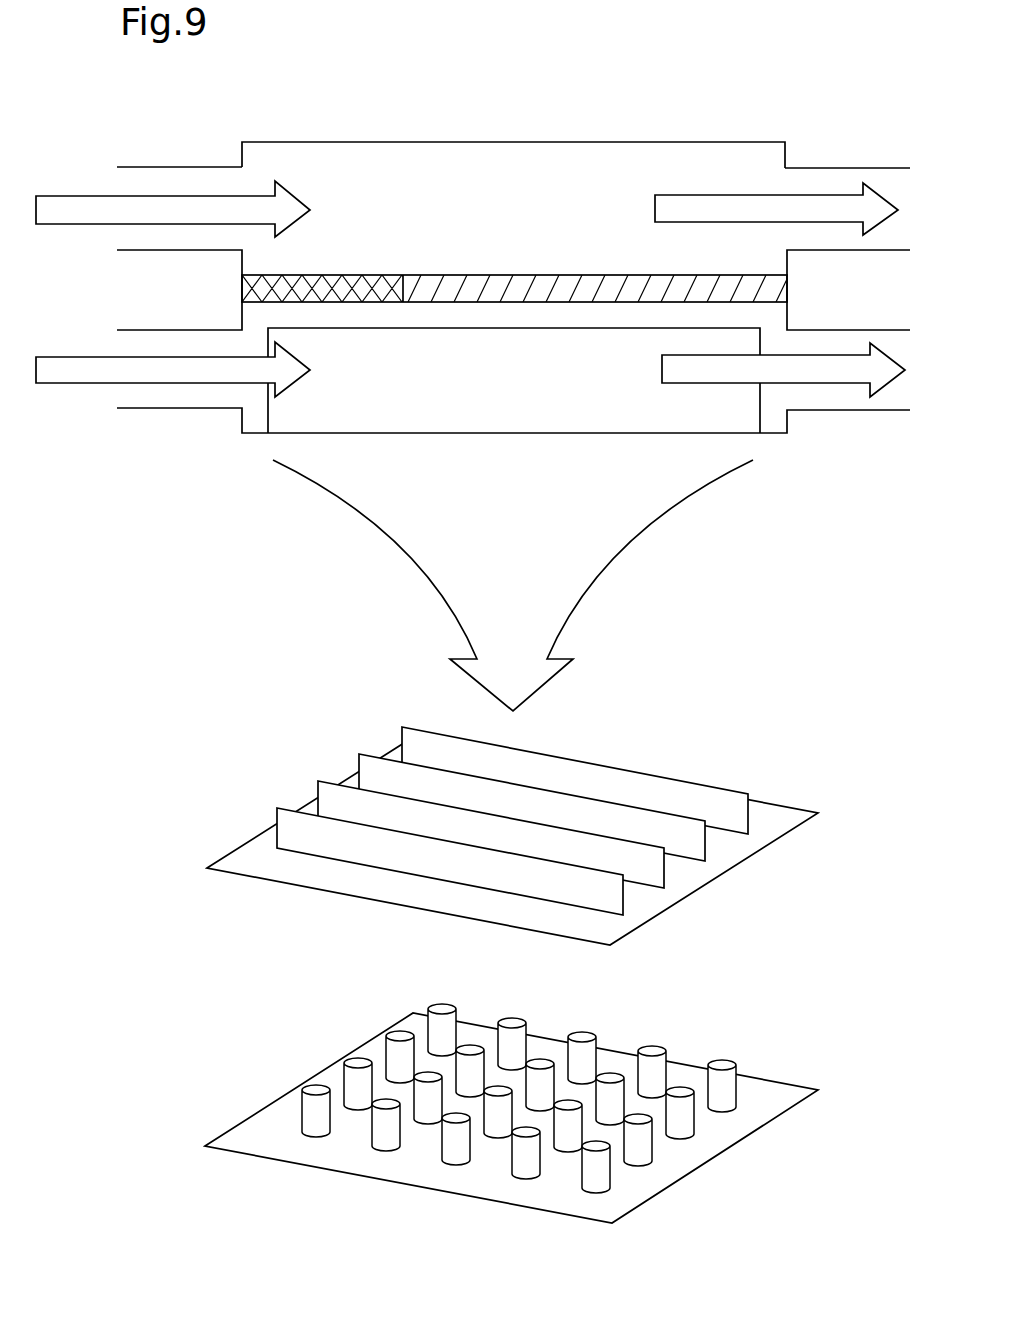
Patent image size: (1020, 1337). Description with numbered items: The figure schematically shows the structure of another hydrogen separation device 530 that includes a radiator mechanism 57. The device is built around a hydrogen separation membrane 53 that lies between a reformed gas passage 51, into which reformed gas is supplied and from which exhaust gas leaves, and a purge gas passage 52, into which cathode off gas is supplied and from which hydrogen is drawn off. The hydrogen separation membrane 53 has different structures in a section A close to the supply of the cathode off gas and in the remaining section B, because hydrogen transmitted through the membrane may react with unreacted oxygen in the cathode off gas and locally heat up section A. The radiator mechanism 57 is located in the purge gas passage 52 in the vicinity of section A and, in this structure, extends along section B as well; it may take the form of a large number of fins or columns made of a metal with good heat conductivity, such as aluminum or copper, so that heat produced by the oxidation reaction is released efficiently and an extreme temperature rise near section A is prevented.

The hydrogen separation device 530 is at (735, 68).
The reformed gas passage 51 is at (445, 195).
The purge gas passage 52 is at (253, 408).
The hydrogen separation membrane 53 is at (553, 272).
The radiator mechanism 57 is at (527, 394).
The section A is at (320, 275).
The section B is at (703, 275).